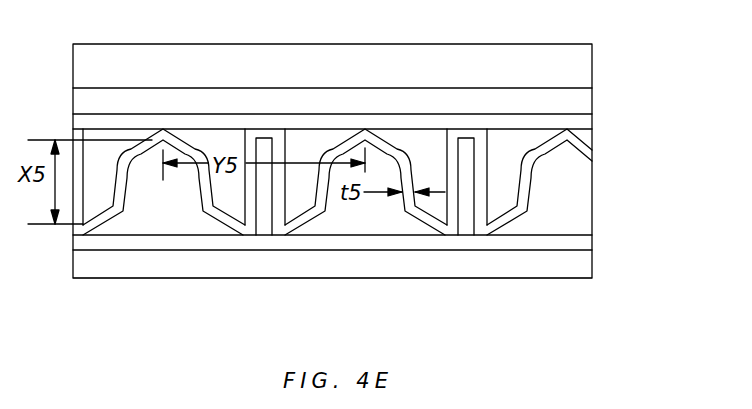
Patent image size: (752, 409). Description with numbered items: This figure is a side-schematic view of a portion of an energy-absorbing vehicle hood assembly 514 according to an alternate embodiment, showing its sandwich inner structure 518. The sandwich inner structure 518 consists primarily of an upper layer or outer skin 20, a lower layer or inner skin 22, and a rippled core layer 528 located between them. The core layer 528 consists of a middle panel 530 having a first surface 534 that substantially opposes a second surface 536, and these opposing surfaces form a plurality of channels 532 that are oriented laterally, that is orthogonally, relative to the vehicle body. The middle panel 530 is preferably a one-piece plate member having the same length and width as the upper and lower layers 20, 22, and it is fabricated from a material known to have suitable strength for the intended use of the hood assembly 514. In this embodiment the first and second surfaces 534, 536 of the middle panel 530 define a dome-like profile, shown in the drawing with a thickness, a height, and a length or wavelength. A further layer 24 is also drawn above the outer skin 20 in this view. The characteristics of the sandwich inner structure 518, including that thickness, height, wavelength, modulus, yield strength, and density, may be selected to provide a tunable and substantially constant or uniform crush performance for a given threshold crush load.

The energy-absorbing vehicle hood assembly 514 is at (156, 58).
The layer 24 is at (283, 104).
The upper layer or outer skin 20 is at (375, 122).
The middle panel 530 is at (457, 137).
The rippled core layer 528 is at (531, 130).
The first surface 534 is at (510, 188).
The second surface 536 is at (563, 212).
The channels 532 is at (344, 222).
The lower layer or inner skin 22 is at (168, 243).
The sandwich inner structure 518 is at (388, 267).